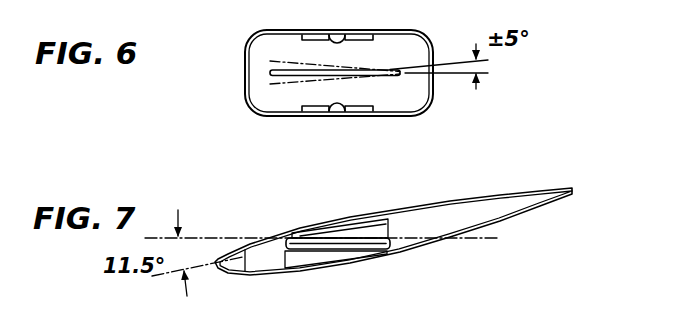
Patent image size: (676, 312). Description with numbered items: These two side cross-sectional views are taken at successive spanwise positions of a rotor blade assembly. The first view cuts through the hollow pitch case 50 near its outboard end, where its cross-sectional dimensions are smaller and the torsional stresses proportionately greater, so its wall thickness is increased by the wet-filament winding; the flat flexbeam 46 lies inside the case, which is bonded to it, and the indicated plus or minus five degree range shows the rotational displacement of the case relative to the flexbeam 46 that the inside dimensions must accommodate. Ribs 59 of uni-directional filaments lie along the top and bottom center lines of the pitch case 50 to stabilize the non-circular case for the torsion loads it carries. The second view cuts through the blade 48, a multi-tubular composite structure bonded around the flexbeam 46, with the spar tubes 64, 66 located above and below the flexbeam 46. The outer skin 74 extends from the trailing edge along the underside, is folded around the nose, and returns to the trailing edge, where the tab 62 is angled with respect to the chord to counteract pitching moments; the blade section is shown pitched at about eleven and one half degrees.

In FIG. 6, the flexbeam 46 is at (376, 77).
In FIG. 7, the flexbeam 46 is at (357, 246).
In FIG. 7, the blade 48 is at (252, 234).
In FIG. 6, the pitch case 50 is at (243, 75).
In FIG. 6, the ribs 59 is at (338, 42).
In FIG. 7, the tab 62 is at (563, 184).
In FIG. 7, the spar tube 64 is at (390, 221).
In FIG. 7, the spar tube 66 is at (286, 257).
In FIG. 7, the outer skin 74 is at (477, 203).